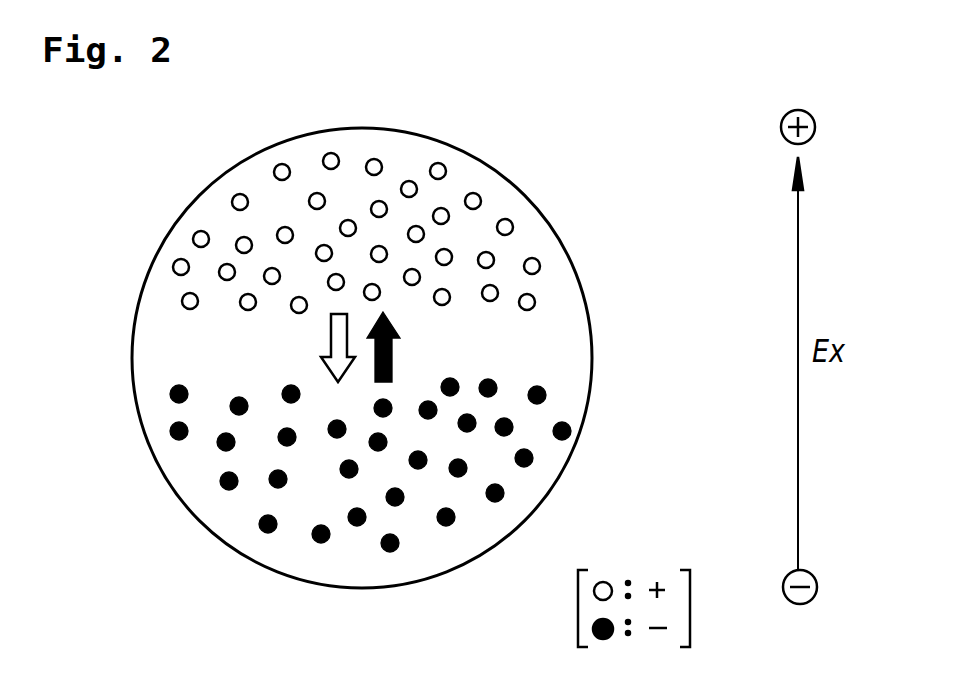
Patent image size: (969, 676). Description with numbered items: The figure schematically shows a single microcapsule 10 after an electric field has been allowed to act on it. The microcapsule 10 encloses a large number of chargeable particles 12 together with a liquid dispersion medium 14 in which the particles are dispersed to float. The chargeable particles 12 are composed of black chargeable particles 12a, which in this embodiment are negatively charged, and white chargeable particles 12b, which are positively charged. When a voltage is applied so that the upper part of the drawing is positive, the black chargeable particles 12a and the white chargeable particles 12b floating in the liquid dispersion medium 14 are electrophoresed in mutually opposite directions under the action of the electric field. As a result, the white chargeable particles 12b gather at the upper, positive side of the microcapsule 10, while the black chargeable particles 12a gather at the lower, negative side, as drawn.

The microcapsule 10 is at (438, 323).
The liquid dispersion medium 14 is at (528, 212).
The chargeable particles 12 is at (457, 352).
The black chargeable particles 12a is at (430, 432).
The white chargeable particles 12b is at (535, 298).